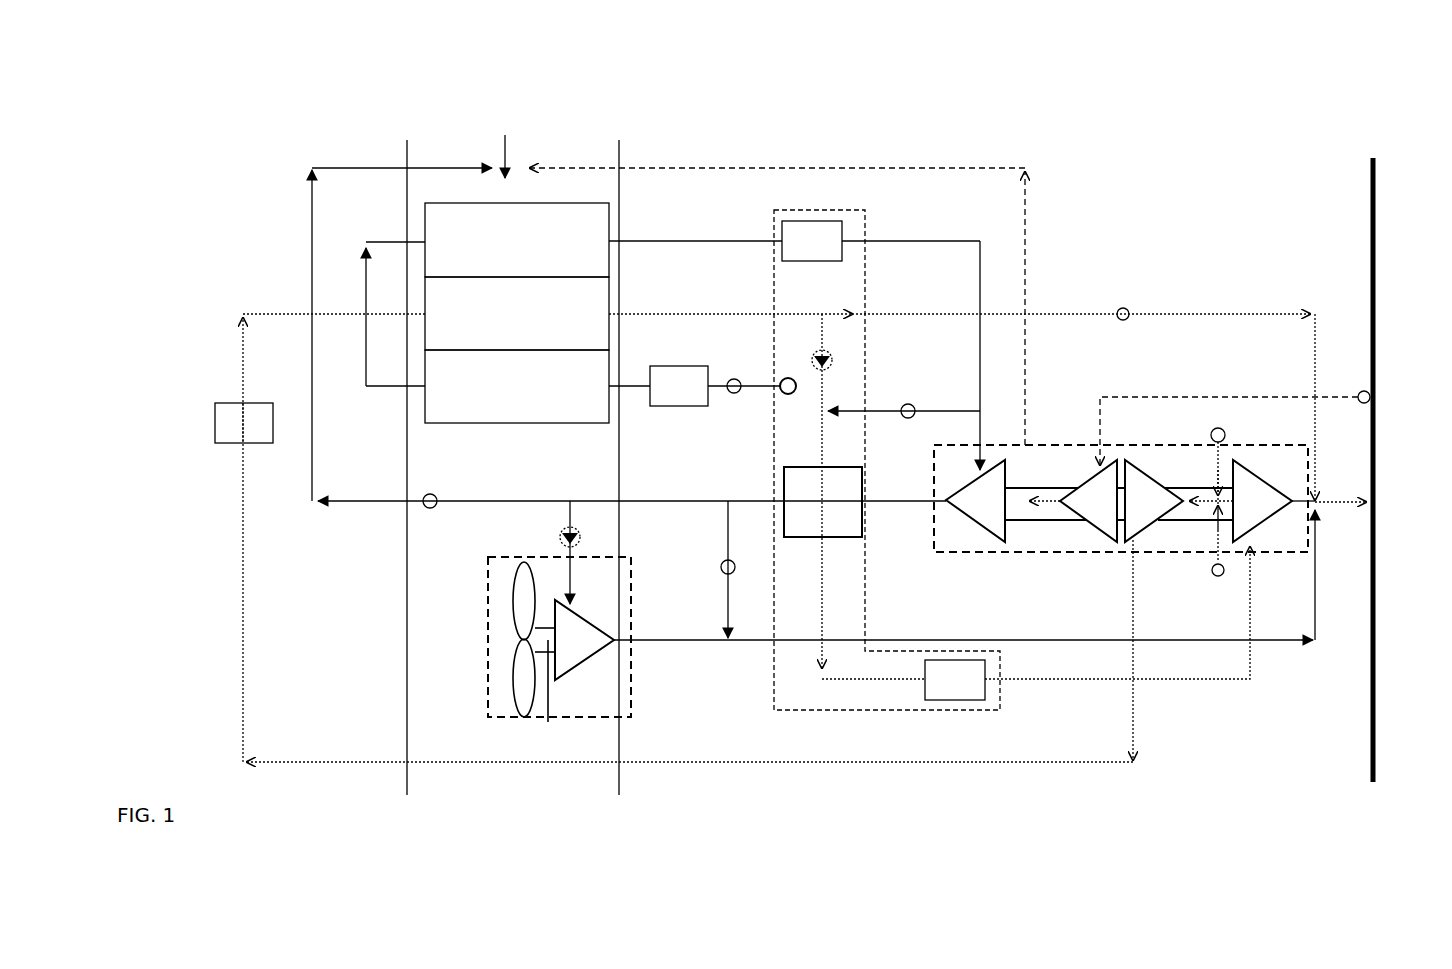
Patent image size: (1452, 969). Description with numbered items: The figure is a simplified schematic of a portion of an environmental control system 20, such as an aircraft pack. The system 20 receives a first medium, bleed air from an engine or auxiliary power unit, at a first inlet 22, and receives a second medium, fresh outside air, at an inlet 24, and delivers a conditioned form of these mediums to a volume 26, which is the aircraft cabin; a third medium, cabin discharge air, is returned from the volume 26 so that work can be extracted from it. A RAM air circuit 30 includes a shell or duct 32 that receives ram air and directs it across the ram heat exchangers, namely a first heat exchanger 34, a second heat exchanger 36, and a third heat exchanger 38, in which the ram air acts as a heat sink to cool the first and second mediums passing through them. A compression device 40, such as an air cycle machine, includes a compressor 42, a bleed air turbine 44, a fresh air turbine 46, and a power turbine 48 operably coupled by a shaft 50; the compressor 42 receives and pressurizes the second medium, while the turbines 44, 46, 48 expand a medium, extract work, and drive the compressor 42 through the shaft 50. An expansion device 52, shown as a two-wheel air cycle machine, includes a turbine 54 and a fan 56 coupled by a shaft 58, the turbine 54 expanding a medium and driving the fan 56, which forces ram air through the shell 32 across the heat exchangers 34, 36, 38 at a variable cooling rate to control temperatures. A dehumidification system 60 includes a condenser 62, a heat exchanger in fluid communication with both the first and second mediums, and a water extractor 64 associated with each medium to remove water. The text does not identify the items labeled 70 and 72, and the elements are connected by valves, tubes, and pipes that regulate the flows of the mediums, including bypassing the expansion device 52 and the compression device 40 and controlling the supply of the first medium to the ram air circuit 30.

The environmental control system 20 is at (158, 158).
The first inlet 22 is at (788, 378).
The inlet 24 is at (1210, 433).
The volume 26 is at (1380, 454).
The RAM air circuit 30 is at (410, 145).
The shell 32 is at (619, 156).
The first heat exchanger 34 is at (508, 386).
The second heat exchanger 36 is at (517, 313).
The third heat exchanger 38 is at (574, 294).
The compression device 40 is at (1312, 543).
The compressor 42 is at (1148, 517).
The bleed air turbine 44 is at (985, 520).
The fresh air turbine 46 is at (1263, 515).
The power turbine 48 is at (1100, 517).
The shaft 50 is at (1037, 517).
The expansion device 52 is at (484, 692).
The turbine 54 is at (585, 652).
The fan 56 is at (527, 595).
The shaft 58 is at (548, 690).
The dehumidification system 60 is at (868, 208).
The condenser 62 is at (836, 513).
The water extractor 64 is at (834, 236).
The ozone converter 70 is at (699, 399).
The second ozone converter 72 is at (226, 416).